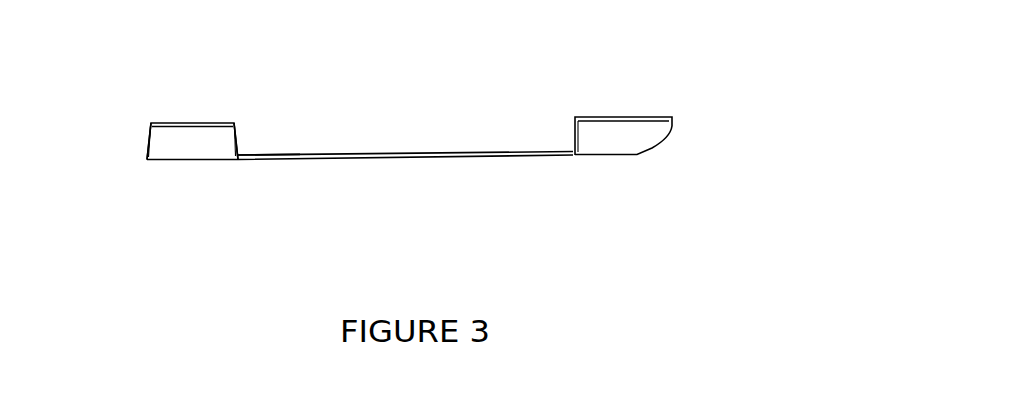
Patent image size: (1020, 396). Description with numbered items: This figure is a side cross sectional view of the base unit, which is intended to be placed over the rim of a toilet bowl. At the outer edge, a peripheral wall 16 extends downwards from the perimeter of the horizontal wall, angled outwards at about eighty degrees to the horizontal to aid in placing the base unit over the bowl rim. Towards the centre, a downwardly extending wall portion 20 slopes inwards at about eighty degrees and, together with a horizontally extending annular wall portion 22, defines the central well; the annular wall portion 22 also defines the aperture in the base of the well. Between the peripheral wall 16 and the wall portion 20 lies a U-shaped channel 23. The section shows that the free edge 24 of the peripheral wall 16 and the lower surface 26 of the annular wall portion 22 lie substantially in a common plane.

The peripheral wall 16 is at (150, 123).
The downwardly extending wall portion 20 is at (239, 138).
The horizontally extending annular wall portion 22 is at (559, 157).
The U-shaped channel 23 is at (188, 143).
The free edge 24 is at (147, 159).
The lower surface 26 is at (250, 160).